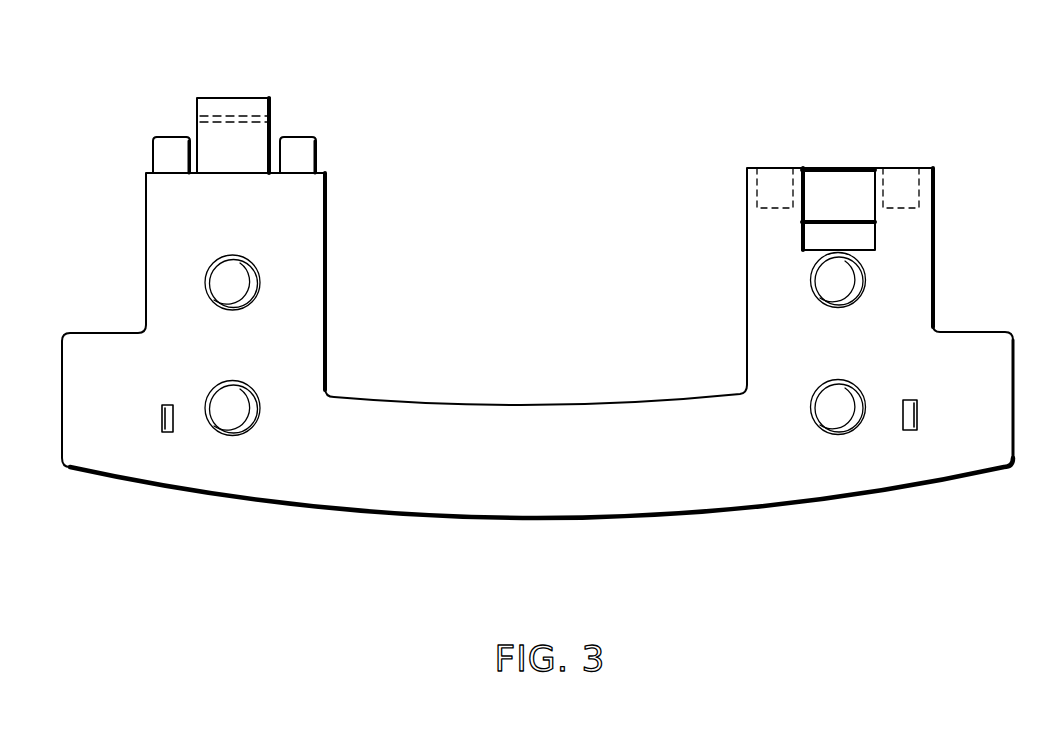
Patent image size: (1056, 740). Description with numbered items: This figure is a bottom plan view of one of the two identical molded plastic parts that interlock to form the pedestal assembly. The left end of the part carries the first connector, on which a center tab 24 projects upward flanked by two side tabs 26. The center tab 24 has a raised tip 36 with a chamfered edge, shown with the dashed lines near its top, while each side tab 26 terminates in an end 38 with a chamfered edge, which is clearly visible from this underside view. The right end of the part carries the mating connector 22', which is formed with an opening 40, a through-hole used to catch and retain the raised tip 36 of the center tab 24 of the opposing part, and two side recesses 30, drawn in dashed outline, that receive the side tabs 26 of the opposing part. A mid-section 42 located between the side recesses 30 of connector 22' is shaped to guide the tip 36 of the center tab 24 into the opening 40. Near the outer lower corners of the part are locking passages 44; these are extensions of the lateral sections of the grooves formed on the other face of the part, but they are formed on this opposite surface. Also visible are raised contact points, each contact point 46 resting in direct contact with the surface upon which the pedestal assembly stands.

The connector 22' is at (546, 343).
The center tab 24 is at (252, 152).
The side tabs 26 is at (167, 158).
The side recesses 30 is at (767, 182).
The raised tip 36 is at (245, 108).
The end 38 is at (170, 138).
The opening 40 is at (863, 235).
The mid-section 42 is at (837, 182).
The locking passages 44 is at (162, 422).
The contact point 46 is at (842, 287).